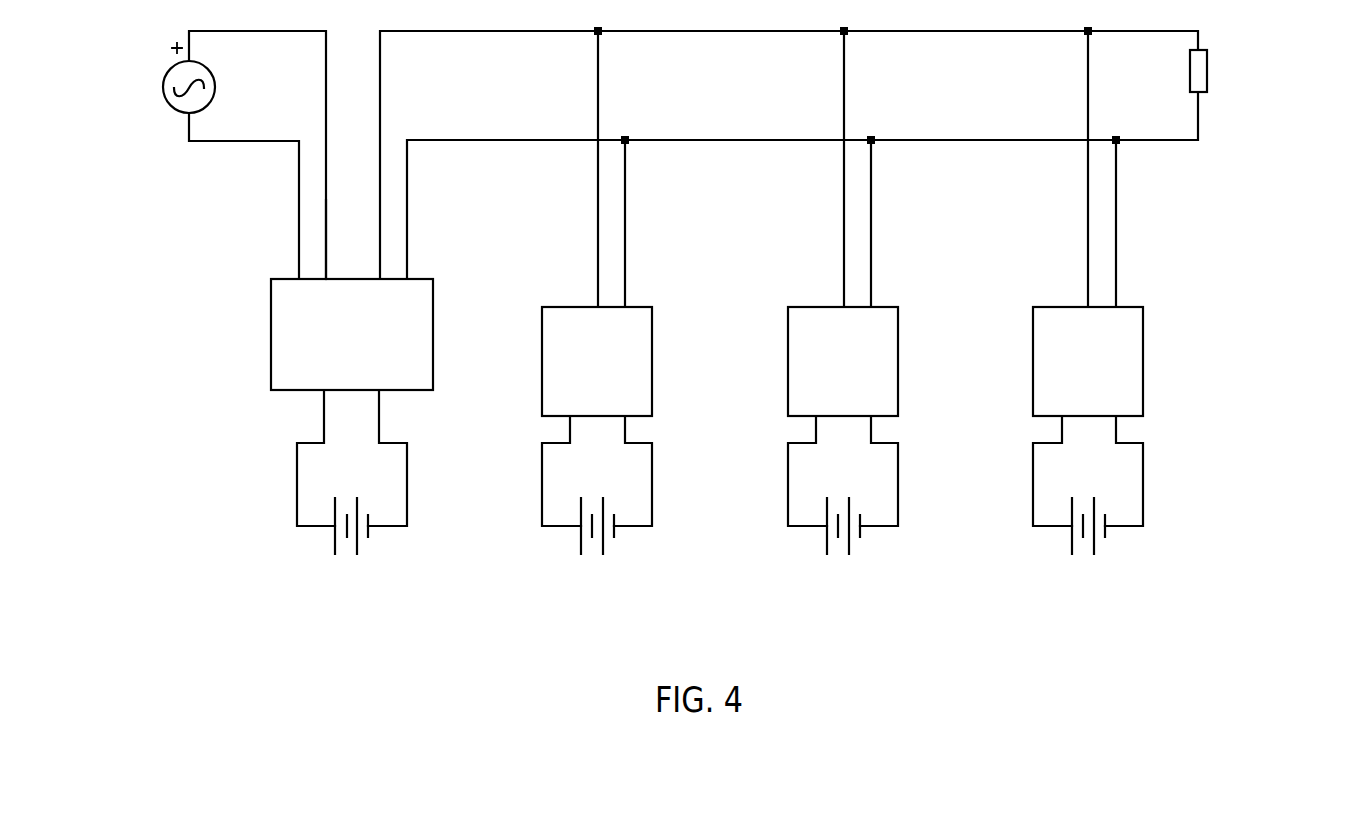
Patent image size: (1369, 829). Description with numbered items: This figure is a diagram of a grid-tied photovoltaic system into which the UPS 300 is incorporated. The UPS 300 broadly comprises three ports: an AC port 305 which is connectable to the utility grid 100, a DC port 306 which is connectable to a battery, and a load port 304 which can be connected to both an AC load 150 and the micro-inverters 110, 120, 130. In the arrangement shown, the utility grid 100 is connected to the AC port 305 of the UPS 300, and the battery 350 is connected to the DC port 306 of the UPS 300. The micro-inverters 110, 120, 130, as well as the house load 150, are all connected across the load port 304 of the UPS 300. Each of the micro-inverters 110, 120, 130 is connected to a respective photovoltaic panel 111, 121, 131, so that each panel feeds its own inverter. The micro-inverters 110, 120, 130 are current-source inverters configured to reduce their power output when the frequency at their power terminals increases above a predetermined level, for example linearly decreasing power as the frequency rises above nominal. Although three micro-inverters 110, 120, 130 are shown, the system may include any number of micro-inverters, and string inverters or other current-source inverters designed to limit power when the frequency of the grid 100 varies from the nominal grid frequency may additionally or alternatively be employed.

The utility grid 100 is at (160, 112).
The AC port 305 is at (312, 270).
The load port 304 is at (390, 258).
The UPS 300 is at (298, 357).
The DC port 306 is at (348, 400).
The battery 350 is at (317, 543).
The micro-inverter 110 is at (574, 377).
The photovoltaic panel 111 is at (558, 542).
The micro-inverter 120 is at (820, 377).
The photovoltaic panel 121 is at (803, 542).
The micro-inverter 130 is at (1065, 377).
The photovoltaic panel 131 is at (1050, 542).
The AC load 150 is at (1213, 77).